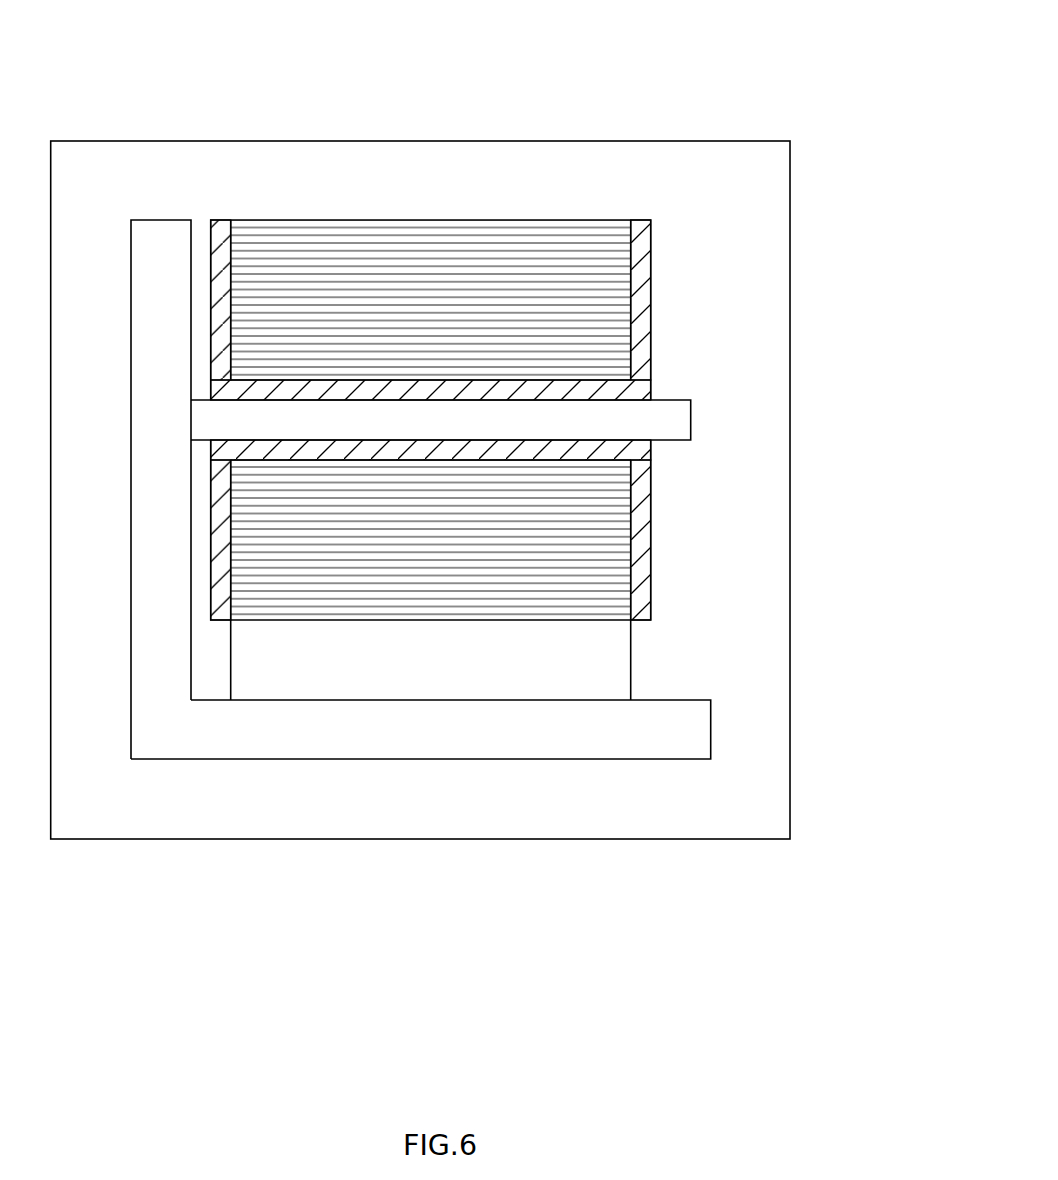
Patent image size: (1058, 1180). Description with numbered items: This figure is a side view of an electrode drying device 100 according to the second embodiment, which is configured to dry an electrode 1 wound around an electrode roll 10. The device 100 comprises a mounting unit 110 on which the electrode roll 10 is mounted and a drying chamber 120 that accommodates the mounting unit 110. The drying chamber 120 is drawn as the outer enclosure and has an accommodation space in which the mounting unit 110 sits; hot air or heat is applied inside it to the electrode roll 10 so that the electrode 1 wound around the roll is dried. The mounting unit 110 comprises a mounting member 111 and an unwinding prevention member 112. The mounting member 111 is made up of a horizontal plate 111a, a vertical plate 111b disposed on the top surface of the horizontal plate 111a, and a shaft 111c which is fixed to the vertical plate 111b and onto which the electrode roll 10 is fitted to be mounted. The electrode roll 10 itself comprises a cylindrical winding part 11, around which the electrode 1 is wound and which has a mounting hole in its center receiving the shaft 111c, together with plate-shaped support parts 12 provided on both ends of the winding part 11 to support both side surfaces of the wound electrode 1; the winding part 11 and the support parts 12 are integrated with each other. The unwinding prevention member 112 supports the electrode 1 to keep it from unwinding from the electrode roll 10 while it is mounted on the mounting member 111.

The electrode drying device 100 is at (620, 98).
The drying chamber 120 is at (790, 487).
The mounting unit 110 is at (401, 623).
The mounting member 111 is at (401, 588).
The horizontal plate 111a is at (430, 738).
The vertical plate 111b is at (147, 665).
The shaft 111c is at (291, 419).
The unwinding prevention member 112 is at (268, 963).
The electrode roll 10 is at (554, 420).
The winding part 11 is at (585, 380).
The support parts 12 is at (651, 309).
The electrode 1 is at (430, 242).